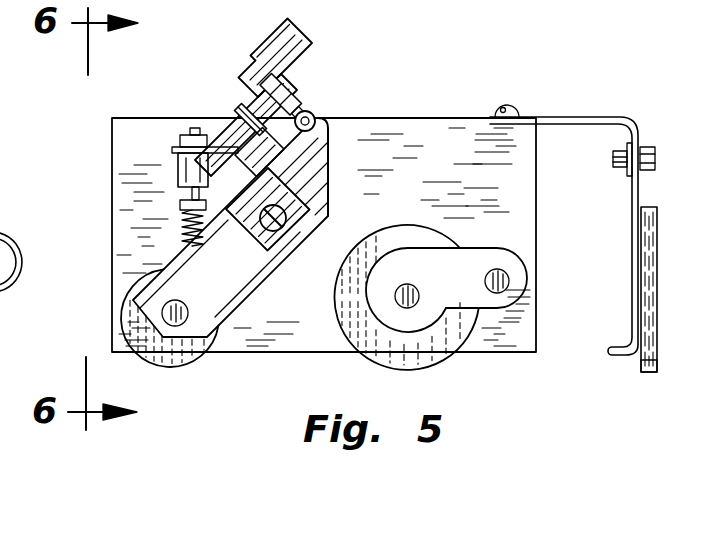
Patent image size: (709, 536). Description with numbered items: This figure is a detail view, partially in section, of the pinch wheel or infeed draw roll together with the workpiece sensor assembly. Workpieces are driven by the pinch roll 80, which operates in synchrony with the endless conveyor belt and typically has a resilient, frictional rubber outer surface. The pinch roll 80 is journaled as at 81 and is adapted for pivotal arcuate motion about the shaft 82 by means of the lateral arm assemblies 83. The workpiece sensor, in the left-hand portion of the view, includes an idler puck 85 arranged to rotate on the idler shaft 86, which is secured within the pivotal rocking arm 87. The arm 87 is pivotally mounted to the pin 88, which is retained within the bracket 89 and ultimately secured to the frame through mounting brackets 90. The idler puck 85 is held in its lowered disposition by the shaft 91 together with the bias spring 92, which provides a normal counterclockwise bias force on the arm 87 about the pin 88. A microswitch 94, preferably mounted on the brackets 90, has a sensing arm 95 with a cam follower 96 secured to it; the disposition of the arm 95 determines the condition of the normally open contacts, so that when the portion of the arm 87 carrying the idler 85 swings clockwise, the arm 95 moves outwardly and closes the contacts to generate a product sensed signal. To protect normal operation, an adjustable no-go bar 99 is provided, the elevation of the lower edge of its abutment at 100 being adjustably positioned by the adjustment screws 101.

The pinch roll 80 is at (432, 366).
The journal 81 is at (418, 291).
The shaft 82 is at (508, 276).
The lateral arm assemblies 83 is at (405, 248).
The idler puck 85 is at (195, 365).
The idler shaft 86 is at (213, 297).
The pivotal rocking arm 87 is at (282, 268).
The pin 88 is at (312, 209).
The bracket 89 is at (330, 167).
The mounting brackets 90 is at (240, 157).
The shaft 91 is at (183, 192).
The bias spring 92 is at (180, 224).
The microswitch 94 is at (287, 20).
The sensing arm 95 is at (320, 103).
The cam follower 96 is at (323, 113).
The no-go bar 99 is at (657, 242).
The abutment lower edge 100 is at (647, 372).
The adjustment screws 101 is at (650, 152).